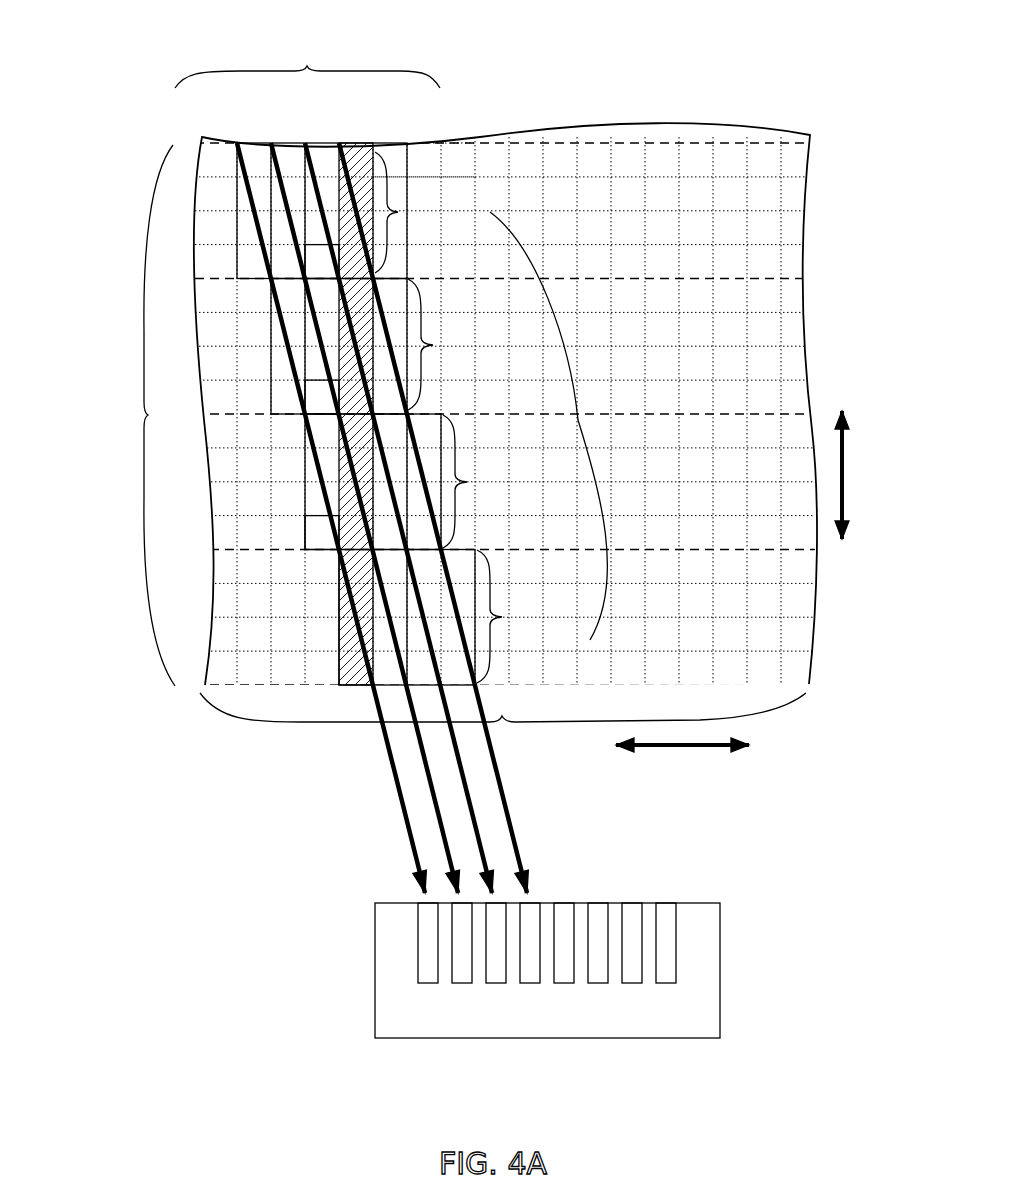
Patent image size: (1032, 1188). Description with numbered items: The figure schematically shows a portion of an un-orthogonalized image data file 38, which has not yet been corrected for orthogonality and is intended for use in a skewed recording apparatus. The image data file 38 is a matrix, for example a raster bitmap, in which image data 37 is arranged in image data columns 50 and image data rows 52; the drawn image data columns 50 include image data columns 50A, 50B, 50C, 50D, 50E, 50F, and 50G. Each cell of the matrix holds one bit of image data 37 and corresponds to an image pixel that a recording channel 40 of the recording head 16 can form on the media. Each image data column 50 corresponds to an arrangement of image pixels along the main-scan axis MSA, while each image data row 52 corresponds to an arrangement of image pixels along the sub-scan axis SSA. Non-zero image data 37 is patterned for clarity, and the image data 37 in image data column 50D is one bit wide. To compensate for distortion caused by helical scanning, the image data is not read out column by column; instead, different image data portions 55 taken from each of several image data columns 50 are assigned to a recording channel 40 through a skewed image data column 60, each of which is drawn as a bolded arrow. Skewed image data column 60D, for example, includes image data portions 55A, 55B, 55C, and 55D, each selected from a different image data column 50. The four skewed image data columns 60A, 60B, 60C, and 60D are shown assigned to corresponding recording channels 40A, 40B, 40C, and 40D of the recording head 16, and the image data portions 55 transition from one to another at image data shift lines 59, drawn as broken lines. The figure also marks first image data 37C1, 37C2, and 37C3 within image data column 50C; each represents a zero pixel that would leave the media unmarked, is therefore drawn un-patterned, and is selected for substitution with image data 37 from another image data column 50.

The recording head 16 is at (698, 955).
The image data 37 is at (453, 192).
The first image data 37C1 is at (317, 530).
The first image data 37C2 is at (317, 396).
The first image data 37C3 is at (317, 260).
The image data file 38 is at (548, 118).
The recording channels 40 is at (646, 895).
The recording channel 40A is at (428, 970).
The recording channel 40B is at (463, 970).
The recording channel 40C is at (497, 973).
The recording channel 40D is at (532, 968).
The image data columns 50 is at (502, 723).
The image data column 50A is at (254, 685).
The image data column 50B is at (288, 685).
The image data column 50C is at (322, 685).
The image data column 50D is at (356, 685).
The image data column 50E is at (390, 685).
The image data column 50F is at (424, 685).
The image data column 50G is at (458, 685).
The image data rows 52 is at (148, 415).
The image data portions 55 is at (573, 420).
The image data portion 55A is at (403, 212).
The image data portion 55B is at (436, 345).
The image data portion 55C is at (469, 482).
The image data portion 55D is at (504, 617).
The image data shift lines 59 is at (760, 142).
The skewed image data columns 60 is at (307, 66).
The skewed image data column 60A is at (250, 187).
The skewed image data column 60B is at (283, 187).
The skewed image data column 60C is at (318, 187).
The skewed image data column 60D is at (348, 183).
The main-scan axis MSA is at (845, 484).
The sub-scan axis SSA is at (668, 748).